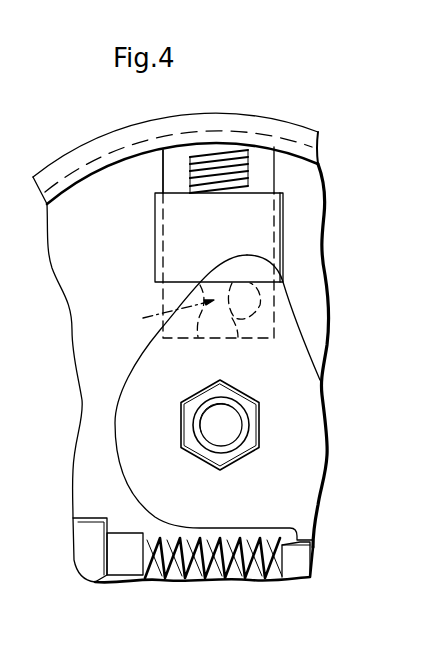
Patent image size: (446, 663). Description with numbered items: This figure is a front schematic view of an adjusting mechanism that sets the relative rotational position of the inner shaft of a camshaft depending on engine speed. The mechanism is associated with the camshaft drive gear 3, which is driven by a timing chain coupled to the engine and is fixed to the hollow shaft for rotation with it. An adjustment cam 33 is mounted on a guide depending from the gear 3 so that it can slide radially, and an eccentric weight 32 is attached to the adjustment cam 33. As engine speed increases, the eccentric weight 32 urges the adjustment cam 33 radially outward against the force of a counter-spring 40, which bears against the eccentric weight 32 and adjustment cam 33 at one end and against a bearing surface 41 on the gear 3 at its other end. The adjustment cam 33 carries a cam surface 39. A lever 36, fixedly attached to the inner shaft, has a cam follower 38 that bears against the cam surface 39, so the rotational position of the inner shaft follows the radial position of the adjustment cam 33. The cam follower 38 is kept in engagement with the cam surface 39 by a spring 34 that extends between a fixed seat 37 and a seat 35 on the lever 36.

The camshaft drive gear 3 is at (106, 130).
The eccentric weight 32 is at (168, 261).
The adjustment cam 33 is at (166, 315).
The spring 34 is at (216, 575).
The seat 35 is at (272, 572).
The lever 36 is at (116, 469).
The fixed seat 37 is at (115, 549).
The cam follower 38 is at (258, 299).
The cam surface 39 is at (285, 332).
The counter-spring 40 is at (200, 160).
The bearing surface 41 is at (173, 156).